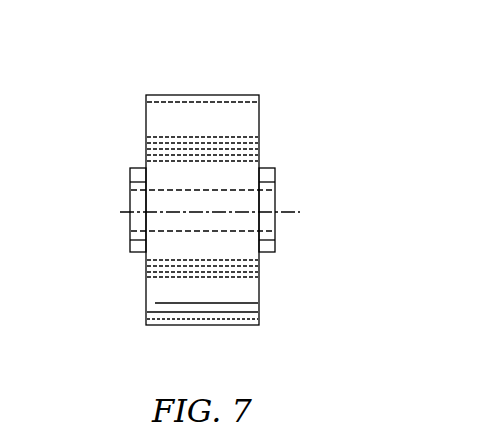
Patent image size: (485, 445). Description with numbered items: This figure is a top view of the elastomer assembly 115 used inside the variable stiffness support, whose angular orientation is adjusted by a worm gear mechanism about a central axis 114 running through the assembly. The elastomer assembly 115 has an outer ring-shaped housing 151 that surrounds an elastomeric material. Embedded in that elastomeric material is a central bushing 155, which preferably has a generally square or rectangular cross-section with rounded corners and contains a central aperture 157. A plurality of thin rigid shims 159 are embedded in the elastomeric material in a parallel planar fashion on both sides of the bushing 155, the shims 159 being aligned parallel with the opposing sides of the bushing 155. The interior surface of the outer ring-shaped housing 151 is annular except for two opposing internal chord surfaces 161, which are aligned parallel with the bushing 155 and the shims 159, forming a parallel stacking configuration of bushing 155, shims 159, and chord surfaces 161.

The elastomer assembly 115 is at (237, 70).
The central axis 114 is at (130, 211).
The outer ring-shaped housing 151 is at (231, 326).
The central bushing 155 is at (277, 193).
The central aperture 157 is at (272, 226).
The thin rigid shims 159 is at (146, 160).
The internal chord surfaces 161 is at (250, 133).